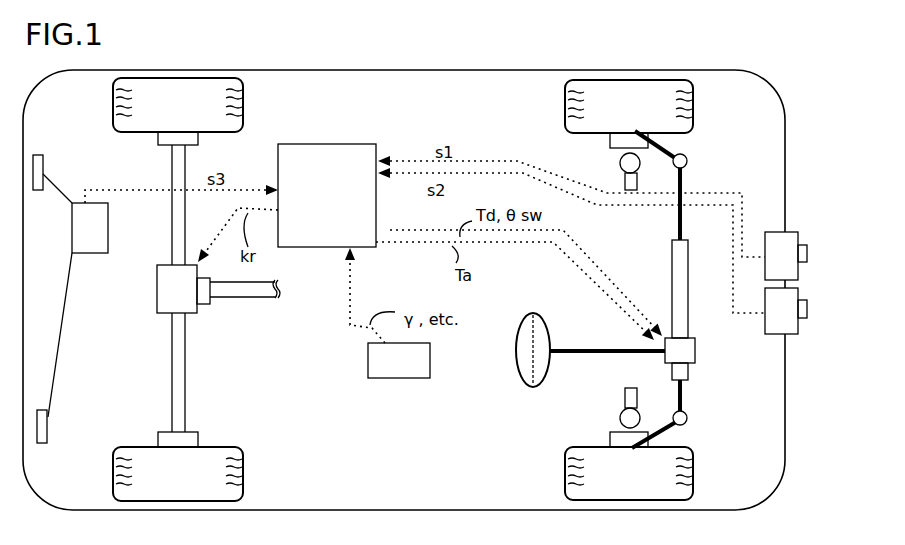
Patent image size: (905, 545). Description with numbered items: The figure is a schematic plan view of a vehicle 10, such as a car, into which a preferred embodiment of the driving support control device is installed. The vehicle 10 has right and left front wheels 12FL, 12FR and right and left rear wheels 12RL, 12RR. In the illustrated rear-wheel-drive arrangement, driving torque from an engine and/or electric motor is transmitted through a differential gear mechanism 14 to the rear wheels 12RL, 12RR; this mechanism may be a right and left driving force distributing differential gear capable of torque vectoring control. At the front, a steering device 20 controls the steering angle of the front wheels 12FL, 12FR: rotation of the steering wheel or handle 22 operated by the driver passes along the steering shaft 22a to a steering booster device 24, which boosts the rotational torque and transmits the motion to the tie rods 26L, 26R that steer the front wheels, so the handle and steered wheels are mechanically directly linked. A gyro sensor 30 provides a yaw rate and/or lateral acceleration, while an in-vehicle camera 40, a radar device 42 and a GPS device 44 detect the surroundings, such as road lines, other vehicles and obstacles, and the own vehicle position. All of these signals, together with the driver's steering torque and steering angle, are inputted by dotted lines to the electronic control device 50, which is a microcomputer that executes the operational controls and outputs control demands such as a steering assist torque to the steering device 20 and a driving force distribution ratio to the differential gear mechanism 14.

The vehicle 10 is at (794, 138).
The rear left wheel 12RL is at (178, 105).
The rear right wheel 12RR is at (178, 474).
The front left wheel 12FL is at (629, 106).
The front right wheel 12FR is at (629, 473).
The differential gear mechanism 14 is at (218, 289).
The steering device 20 is at (694, 332).
The steering wheel (handle) 22 is at (514, 351).
The steering shaft 22a is at (600, 350).
The steering booster device 24 is at (697, 352).
The left tie rod 26L is at (668, 151).
The right tie rod 26R is at (668, 411).
The yaw rate, lateral acceleration sensor (gyro sensor) 30 is at (399, 360).
The in-vehicle camera 40 is at (786, 256).
The in-vehicle radar device 42 is at (786, 311).
The GPS device 44 is at (70, 299).
The electronic control device 50 is at (327, 195).